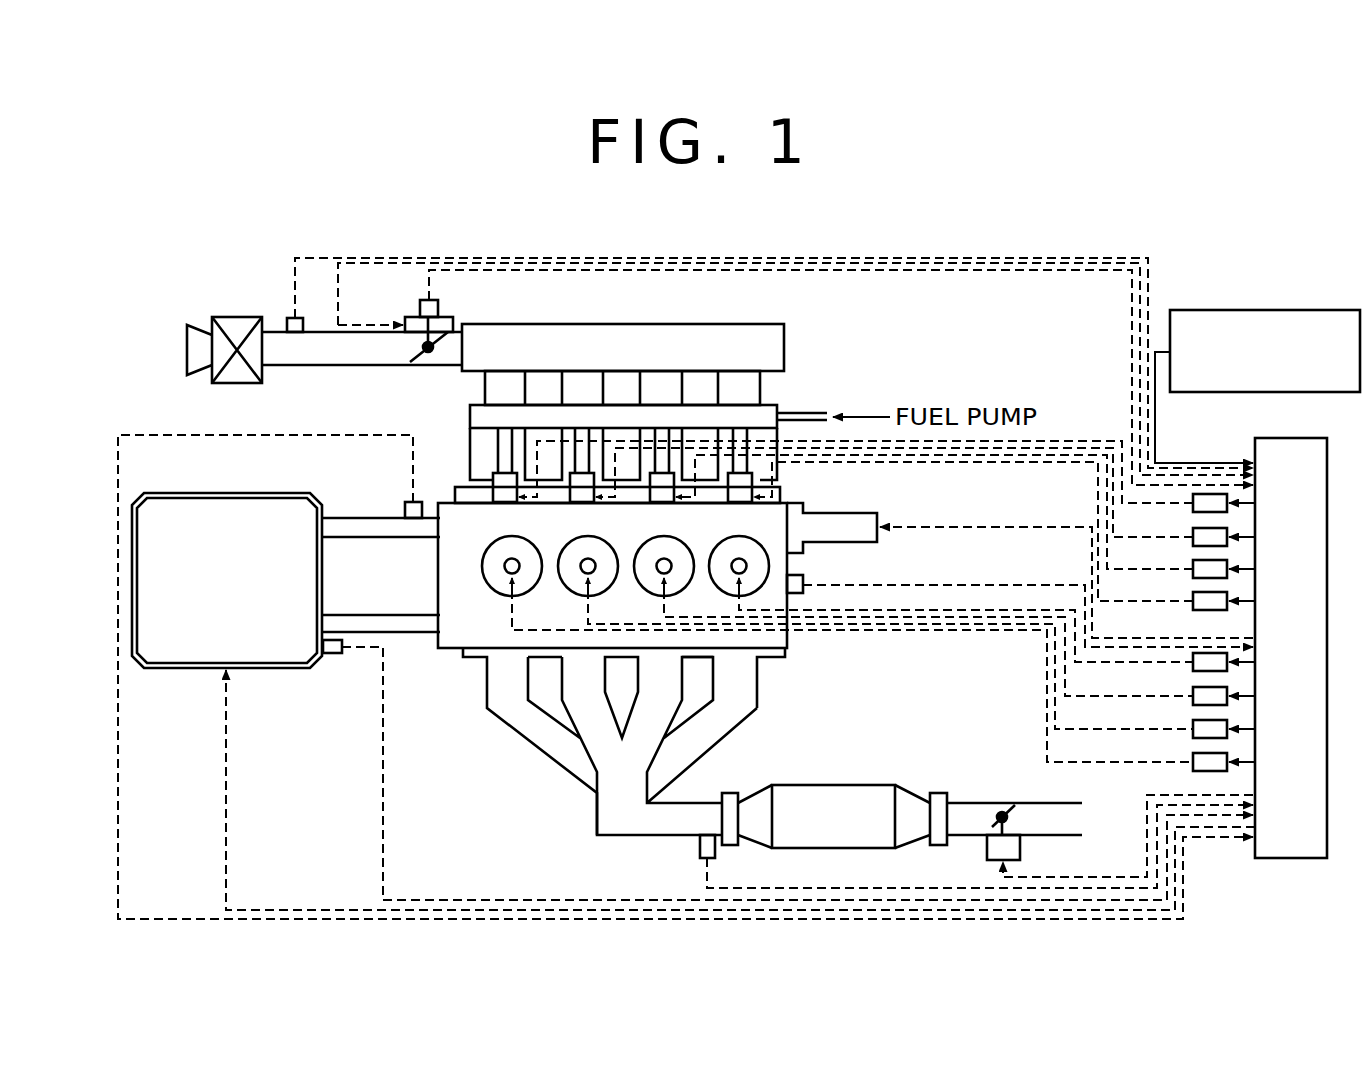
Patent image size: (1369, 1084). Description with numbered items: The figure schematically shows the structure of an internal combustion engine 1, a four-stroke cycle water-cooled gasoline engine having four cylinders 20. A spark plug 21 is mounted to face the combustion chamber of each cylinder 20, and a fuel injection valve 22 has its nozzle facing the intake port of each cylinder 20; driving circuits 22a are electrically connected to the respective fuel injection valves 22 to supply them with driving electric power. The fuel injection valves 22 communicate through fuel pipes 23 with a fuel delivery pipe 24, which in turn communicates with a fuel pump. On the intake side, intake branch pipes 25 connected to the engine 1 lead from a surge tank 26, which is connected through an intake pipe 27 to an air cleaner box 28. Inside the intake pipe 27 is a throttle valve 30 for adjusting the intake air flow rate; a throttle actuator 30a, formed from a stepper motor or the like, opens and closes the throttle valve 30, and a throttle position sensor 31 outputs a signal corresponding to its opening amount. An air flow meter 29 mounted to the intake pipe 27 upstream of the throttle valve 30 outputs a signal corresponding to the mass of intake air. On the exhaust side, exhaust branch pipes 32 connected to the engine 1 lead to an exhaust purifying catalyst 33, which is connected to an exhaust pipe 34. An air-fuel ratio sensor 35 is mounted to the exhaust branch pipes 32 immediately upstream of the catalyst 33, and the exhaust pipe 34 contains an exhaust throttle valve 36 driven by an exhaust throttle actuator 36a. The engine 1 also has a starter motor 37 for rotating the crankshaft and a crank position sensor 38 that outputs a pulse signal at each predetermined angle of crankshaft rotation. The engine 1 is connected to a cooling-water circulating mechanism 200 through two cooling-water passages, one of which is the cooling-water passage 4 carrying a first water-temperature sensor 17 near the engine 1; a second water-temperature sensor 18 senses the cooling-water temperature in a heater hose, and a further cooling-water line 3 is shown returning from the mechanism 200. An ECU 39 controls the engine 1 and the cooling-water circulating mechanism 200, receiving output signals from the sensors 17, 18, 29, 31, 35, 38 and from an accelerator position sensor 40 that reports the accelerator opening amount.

The internal combustion engine 1 is at (445, 662).
The cooling water outlet passage 3 is at (383, 615).
The cooling-water passage 4 is at (393, 537).
The first water-temperature sensor 17 is at (405, 508).
The second water-temperature sensor 18 is at (332, 655).
The cylinder 20 is at (493, 590).
The spark plug 21 is at (508, 560).
The fuel injection valve 22 is at (493, 478).
The driving circuit 22a is at (1200, 512).
The fuel pipe 23 is at (498, 455).
The fuel delivery pipe 24 is at (470, 404).
The intake branch pipe 25 is at (763, 388).
The surge tank 26 is at (688, 324).
The intake pipe 27 is at (312, 367).
The air cleaner box 28 is at (235, 317).
The air flow meter 29 is at (294, 318).
The throttle valve 30 is at (412, 358).
The throttle actuator 30a is at (403, 319).
The throttle position sensor 31 is at (440, 310).
The exhaust branch pipe 32 is at (758, 680).
The exhaust purifying catalyst 33 is at (822, 785).
The exhaust pipe 34 is at (1052, 803).
The air-fuel ratio sensor 35 is at (700, 847).
The exhaust throttle valve 36 is at (1000, 810).
The exhaust throttle actuator 36a is at (987, 845).
The starter motor 37 is at (843, 512).
The crank position sensor 38 is at (795, 575).
The ECU 39 is at (1292, 438).
The accelerator position sensor 40 is at (1315, 310).
The cooling-water circulating mechanism 200 is at (228, 493).